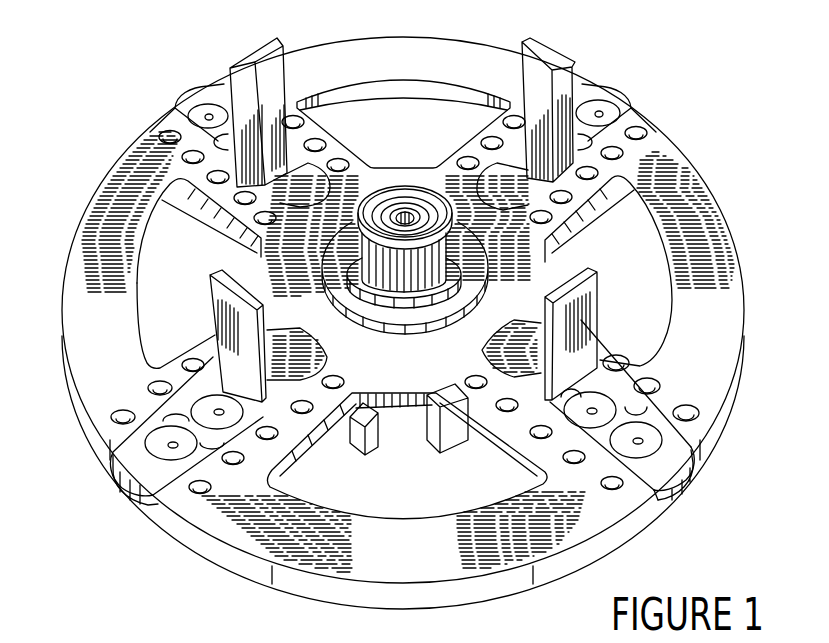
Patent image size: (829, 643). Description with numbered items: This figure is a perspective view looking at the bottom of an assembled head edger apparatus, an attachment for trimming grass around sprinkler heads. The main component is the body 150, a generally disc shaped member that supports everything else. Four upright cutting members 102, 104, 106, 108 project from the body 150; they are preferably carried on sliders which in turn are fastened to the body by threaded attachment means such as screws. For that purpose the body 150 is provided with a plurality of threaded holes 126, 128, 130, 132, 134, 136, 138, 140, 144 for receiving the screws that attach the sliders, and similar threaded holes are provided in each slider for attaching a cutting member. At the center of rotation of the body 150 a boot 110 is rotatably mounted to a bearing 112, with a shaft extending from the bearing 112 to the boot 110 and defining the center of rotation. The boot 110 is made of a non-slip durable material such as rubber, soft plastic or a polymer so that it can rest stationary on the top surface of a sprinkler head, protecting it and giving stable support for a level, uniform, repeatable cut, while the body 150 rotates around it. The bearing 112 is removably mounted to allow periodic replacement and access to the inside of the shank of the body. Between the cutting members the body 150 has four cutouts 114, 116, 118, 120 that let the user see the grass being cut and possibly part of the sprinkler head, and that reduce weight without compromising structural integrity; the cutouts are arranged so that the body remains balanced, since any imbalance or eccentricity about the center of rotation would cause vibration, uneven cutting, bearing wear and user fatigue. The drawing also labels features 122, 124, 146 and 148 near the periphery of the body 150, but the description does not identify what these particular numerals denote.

The cutting member 102 is at (590, 326).
The cutting member 104 is at (562, 75).
The cutting member 106 is at (277, 76).
The cutting member 108 is at (220, 363).
The boot 110 is at (403, 216).
The bearing 112 is at (405, 298).
The cutout 114 is at (380, 497).
The cutout 116 is at (636, 250).
The cutout 118 is at (423, 129).
The cutout 120 is at (196, 275).
The lobe side face 122 is at (693, 468).
The arm edge 124 is at (640, 362).
The threaded hole 126 is at (650, 500).
The threaded hole 128 is at (574, 465).
The threaded hole 130 is at (540, 439).
The threaded hole 132 is at (505, 413).
The threaded hole 134 is at (474, 377).
The threaded hole 136 is at (699, 412).
The threaded hole 138 is at (655, 382).
The threaded hole 140 is at (628, 360).
The threaded hole 144 is at (495, 332).
The arm lower edge 146 is at (600, 450).
The lobe corner 148 is at (672, 405).
The body 150 is at (88, 320).